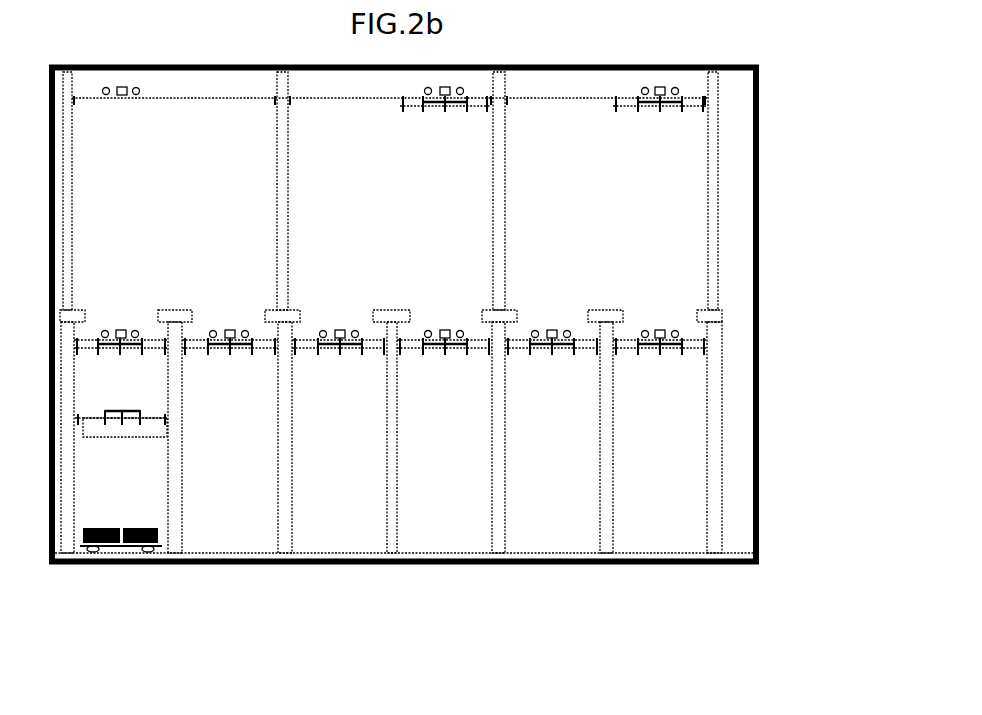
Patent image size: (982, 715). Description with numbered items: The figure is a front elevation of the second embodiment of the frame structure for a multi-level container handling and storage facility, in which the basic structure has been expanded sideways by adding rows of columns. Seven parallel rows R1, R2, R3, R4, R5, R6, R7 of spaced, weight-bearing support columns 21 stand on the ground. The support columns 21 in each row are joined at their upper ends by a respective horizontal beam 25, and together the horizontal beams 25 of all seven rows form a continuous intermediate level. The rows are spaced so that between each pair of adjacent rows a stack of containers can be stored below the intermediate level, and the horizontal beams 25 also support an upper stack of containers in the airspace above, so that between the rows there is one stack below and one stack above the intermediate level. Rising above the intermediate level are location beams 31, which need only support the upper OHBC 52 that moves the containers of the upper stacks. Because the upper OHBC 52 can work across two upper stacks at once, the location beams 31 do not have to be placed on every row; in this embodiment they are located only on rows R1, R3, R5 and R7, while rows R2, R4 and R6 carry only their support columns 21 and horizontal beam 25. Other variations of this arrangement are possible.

The upper OHBC 52 is at (712, 90).
The location beam 31 is at (736, 207).
The horizontal beam 25 is at (736, 325).
The support column 21 is at (732, 438).
The first row of support columns R1 is at (65, 573).
The second row of support columns R2 is at (182, 573).
The third row of support columns R3 is at (281, 573).
The fourth row of support columns R4 is at (383, 573).
The fifth row of support columns R5 is at (495, 567).
The sixth row of support columns R6 is at (598, 570).
The seventh row of support columns R7 is at (702, 570).